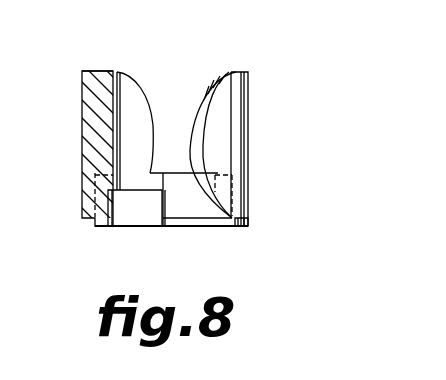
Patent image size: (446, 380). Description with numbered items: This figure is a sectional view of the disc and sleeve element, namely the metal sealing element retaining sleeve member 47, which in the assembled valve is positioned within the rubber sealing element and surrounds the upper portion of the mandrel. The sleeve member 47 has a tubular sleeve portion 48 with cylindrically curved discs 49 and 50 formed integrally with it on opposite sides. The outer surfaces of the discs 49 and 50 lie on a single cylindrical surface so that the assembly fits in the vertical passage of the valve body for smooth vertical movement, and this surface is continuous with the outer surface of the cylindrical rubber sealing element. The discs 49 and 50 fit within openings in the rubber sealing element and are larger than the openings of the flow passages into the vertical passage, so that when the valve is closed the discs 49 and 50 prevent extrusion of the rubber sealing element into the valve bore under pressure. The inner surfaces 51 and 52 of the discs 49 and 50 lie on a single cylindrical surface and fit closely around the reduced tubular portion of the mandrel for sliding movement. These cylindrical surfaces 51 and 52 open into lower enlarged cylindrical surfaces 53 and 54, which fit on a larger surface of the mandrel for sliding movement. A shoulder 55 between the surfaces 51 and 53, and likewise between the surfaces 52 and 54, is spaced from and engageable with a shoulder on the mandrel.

The sealing element retaining sleeve member 47 is at (114, 238).
The tubular sleeve portion 48 is at (198, 228).
The cylindrically curved disc 49 is at (82, 123).
The cylindrically curved disc 50 is at (238, 140).
The inner surface 51 is at (140, 87).
The inner surface 52 is at (216, 72).
The lower enlarged cylindrical surface 53 is at (115, 210).
The lower enlarged cylindrical surface 54 is at (246, 228).
The shoulder 55 is at (138, 197).